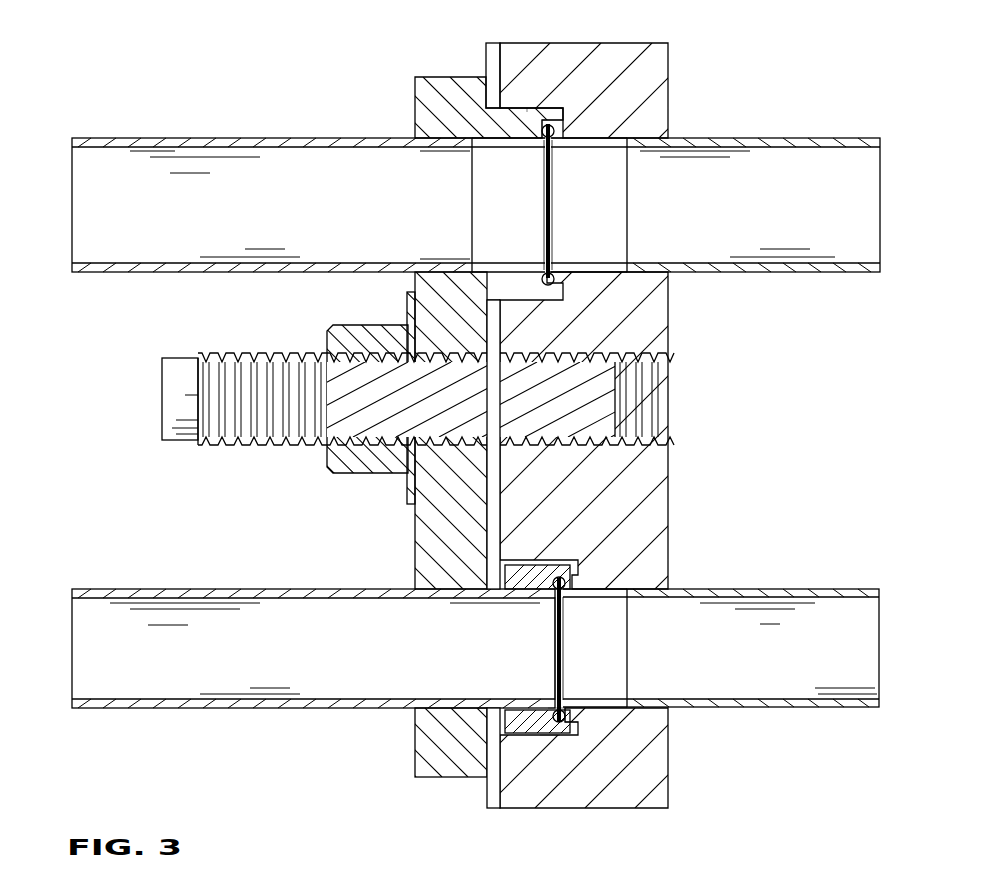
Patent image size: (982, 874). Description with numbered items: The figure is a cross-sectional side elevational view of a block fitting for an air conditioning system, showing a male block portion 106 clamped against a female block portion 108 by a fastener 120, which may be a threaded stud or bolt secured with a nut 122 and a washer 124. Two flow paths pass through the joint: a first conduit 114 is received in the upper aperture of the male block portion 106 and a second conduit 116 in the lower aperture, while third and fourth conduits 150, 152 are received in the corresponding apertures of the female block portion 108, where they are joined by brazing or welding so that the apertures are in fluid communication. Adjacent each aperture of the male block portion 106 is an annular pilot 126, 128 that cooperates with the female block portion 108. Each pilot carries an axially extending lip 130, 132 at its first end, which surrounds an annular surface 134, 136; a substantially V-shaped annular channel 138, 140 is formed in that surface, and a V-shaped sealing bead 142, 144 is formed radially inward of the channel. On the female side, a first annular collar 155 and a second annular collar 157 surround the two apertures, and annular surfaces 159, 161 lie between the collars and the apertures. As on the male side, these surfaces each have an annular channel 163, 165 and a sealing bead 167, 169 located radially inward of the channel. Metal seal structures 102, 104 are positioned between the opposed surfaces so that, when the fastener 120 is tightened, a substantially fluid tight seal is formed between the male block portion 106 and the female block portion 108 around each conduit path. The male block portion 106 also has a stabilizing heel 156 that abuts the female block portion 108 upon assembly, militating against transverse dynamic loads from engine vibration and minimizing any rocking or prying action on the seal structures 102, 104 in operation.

The metal seal structure 102 is at (530, 198).
The metal seal structure 104 is at (542, 650).
The male block portion 106 is at (415, 88).
The female block portion 108 is at (668, 58).
The first conduit 114 is at (103, 138).
The second conduit 116 is at (103, 589).
The fastener 120 is at (160, 400).
The nut 122 is at (350, 473).
The washer 124 is at (408, 500).
The annular pilot 126 is at (527, 110).
The annular pilot 128 is at (547, 735).
The axially extending lip 130 is at (554, 131).
The axially extending lip 132 is at (567, 718).
The annular surface 134 is at (547, 126).
The annular surface 136 is at (532, 724).
The annular channel 138 is at (540, 140).
The annular channel 140 is at (552, 712).
The sealing bead 142 is at (555, 142).
The sealing bead 144 is at (557, 698).
The third conduit 150 is at (787, 138).
The fourth conduit 152 is at (818, 589).
The first annular collar 155 is at (543, 120).
The stabilizing heel 156 is at (493, 78).
The second annular collar 157 is at (563, 735).
The annular surface 159 is at (563, 118).
The annular surface 161 is at (578, 565).
The annular channel 163 is at (553, 140).
The annular channel 165 is at (575, 718).
The sealing bead 167 is at (577, 272).
The sealing bead 169 is at (567, 583).